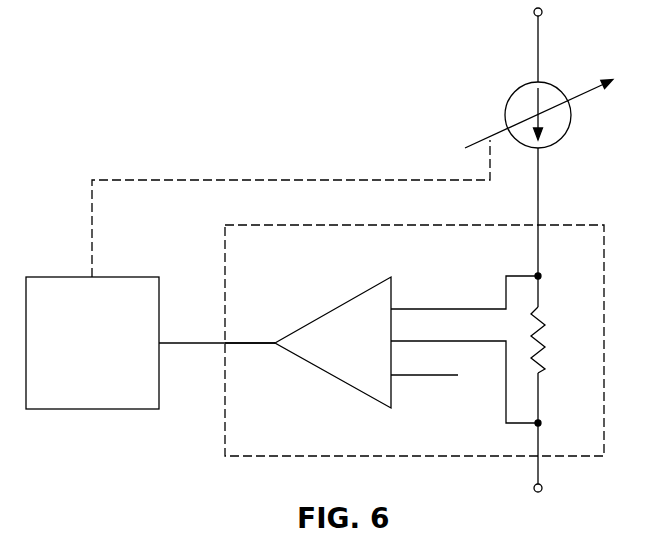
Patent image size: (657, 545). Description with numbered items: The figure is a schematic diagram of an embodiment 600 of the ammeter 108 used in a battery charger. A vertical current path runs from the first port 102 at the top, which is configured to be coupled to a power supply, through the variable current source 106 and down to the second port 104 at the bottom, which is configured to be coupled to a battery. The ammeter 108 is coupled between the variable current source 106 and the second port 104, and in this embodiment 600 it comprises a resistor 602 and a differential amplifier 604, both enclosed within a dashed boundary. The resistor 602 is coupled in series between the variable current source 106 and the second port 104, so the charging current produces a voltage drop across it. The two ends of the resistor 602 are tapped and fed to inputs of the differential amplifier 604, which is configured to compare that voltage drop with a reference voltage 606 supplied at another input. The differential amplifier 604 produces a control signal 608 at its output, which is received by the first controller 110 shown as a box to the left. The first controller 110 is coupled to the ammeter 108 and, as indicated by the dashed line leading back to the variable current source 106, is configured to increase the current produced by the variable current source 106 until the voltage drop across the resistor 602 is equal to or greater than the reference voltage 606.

The first port 102 is at (536, 16).
The second port 104 is at (545, 491).
The variable current source 106 is at (563, 135).
The ammeter 108 is at (414, 340).
The first controller 110 is at (92, 343).
The embodiment of ammeter 600 is at (414, 340).
The resistor 602 is at (555, 342).
The differential amplifier 604 is at (406, 349).
The reference voltage 606 is at (446, 374).
The control signal 608 is at (238, 341).